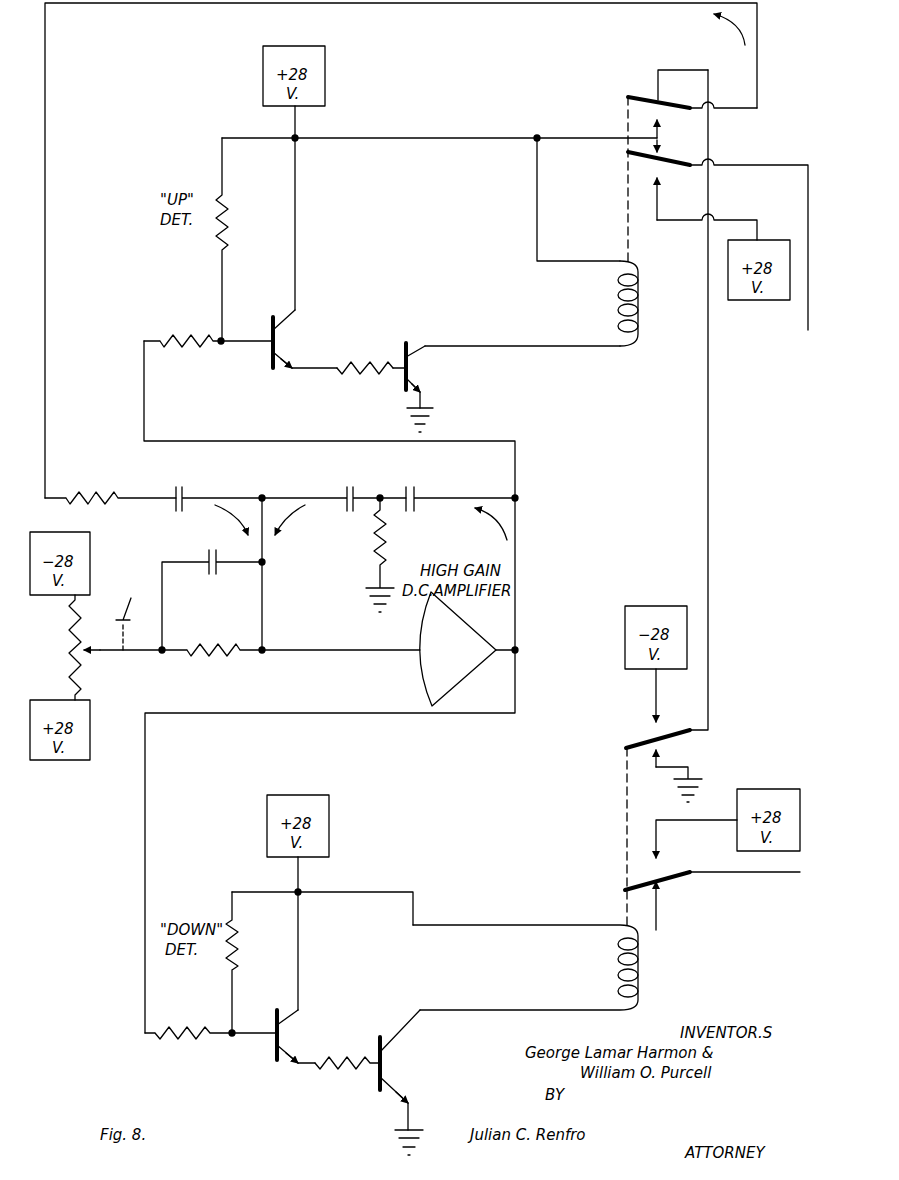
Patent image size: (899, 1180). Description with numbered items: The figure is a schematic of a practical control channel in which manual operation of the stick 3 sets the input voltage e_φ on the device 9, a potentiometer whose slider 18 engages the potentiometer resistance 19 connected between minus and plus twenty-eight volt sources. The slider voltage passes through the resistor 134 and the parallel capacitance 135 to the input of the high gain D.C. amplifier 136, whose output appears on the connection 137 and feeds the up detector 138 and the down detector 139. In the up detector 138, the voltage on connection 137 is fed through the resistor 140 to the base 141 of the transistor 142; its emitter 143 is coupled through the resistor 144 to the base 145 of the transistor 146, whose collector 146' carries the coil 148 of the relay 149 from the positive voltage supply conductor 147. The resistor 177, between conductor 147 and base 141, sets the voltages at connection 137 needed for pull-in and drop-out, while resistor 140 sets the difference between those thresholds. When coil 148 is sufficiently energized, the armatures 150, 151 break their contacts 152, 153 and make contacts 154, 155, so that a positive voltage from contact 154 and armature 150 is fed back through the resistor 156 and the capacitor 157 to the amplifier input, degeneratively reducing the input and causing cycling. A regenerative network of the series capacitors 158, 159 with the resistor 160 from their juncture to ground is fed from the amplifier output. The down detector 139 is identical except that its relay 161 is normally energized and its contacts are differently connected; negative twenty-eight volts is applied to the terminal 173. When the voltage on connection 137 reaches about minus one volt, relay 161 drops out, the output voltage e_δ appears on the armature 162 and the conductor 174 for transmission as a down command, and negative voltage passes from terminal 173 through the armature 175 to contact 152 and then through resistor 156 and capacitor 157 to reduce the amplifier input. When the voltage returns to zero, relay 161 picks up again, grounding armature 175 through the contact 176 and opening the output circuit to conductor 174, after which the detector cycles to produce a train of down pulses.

The stick 3 is at (124, 610).
The device for producing D.C. input voltage 9 is at (50, 652).
The slider 18 is at (108, 654).
The potentiometer resistance 19 is at (80, 672).
The resistor 134 is at (198, 642).
The parallel capacitance 135 is at (212, 556).
The high gain D.C. amplifier 136 is at (455, 682).
The connection 137 is at (518, 675).
The up detector 138 is at (572, 340).
The down detector 139 is at (571, 916).
The resistor 140 is at (200, 351).
The base 141 is at (258, 344).
The transistor 142 is at (268, 330).
The emitter 143 is at (288, 362).
The resistor 144 is at (355, 378).
The base 145 is at (396, 374).
The transistor 146 is at (391, 365).
The collector 146' is at (440, 391).
The positive voltage supply conductor 147 is at (300, 138).
The coil 148 is at (640, 298).
The relay 149 is at (690, 255).
The armature 150 is at (684, 104).
The armature 151 is at (680, 160).
The contact 152 is at (650, 80).
The contact 153 is at (640, 148).
The contact 154 is at (664, 120).
The contact 155 is at (658, 200).
The resistor 156 is at (78, 490).
The capacitor 157 is at (192, 478).
The capacitor 158 is at (424, 478).
The capacitor 159 is at (362, 478).
The resistor 160 is at (386, 520).
The relay 161 is at (738, 949).
The armature 162 is at (664, 882).
The terminal 173 is at (654, 694).
The conductor 174 is at (706, 876).
The armature 175 is at (654, 746).
The contact 176 is at (666, 758).
The resistor 177 is at (228, 212).